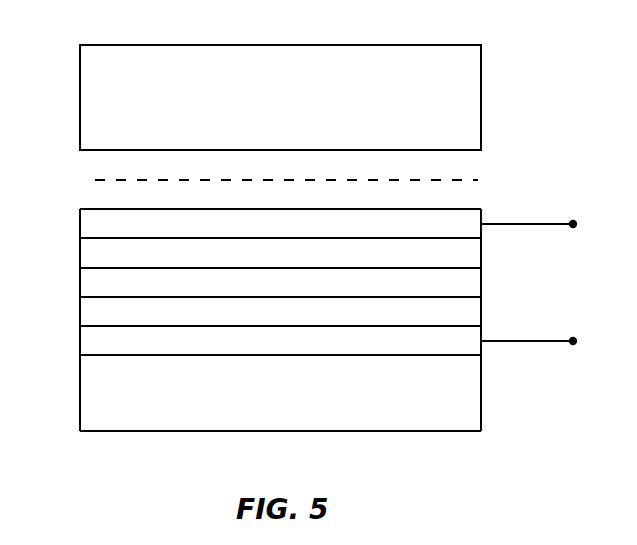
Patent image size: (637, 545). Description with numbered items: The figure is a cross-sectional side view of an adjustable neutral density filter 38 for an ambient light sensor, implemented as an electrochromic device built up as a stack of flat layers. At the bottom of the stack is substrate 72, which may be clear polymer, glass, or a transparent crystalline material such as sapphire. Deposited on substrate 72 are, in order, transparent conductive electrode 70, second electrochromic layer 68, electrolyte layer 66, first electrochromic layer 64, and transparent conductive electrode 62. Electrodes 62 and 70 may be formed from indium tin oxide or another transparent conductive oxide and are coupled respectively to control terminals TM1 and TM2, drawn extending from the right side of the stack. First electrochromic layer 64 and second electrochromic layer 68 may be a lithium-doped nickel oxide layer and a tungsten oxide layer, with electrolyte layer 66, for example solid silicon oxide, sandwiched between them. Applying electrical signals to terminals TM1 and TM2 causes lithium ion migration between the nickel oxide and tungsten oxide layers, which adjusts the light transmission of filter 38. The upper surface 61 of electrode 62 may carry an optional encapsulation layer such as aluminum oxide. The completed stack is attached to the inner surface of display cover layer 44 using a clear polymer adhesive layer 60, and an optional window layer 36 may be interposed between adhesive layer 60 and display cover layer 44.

The display cover layer 44 is at (88, 101).
The window layer 36 is at (88, 171).
The polymer adhesive layer 60 is at (78, 197).
The surface 61 is at (449, 205).
The transparent conductive electrode 62 is at (470, 219).
The first electrochromic layer 64 is at (470, 253).
The electrolyte layer 66 is at (470, 283).
The second electrochromic layer 68 is at (470, 309).
The transparent conductive electrode 70 is at (470, 335).
The substrate 72 is at (470, 399).
The neutral density filter 38 is at (60, 210).
The control terminal TM1 is at (552, 224).
The control terminal TM2 is at (552, 341).